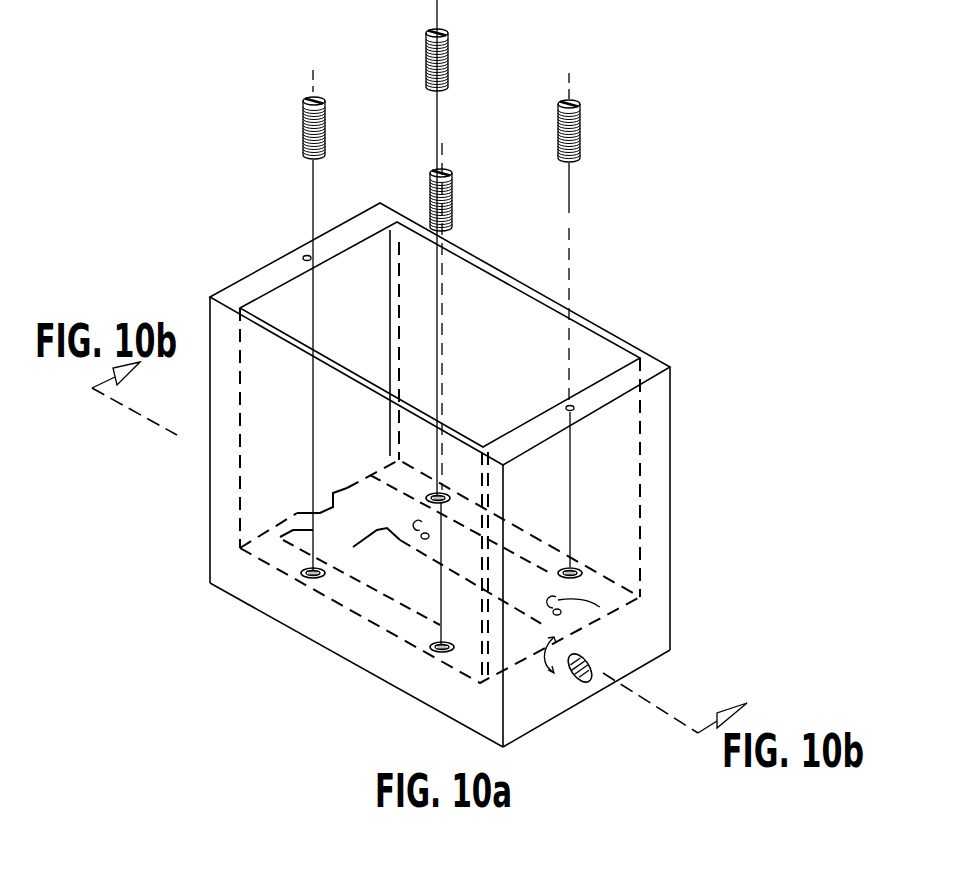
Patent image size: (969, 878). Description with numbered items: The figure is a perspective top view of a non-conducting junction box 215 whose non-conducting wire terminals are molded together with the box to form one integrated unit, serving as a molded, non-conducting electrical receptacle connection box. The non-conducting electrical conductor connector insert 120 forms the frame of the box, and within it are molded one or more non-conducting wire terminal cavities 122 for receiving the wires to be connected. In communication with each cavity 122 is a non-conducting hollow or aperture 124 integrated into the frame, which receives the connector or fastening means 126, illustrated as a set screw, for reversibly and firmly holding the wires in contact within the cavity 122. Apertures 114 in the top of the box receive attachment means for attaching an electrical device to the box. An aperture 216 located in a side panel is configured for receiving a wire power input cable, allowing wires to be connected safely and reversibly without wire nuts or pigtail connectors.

The aperture for receiving attachment means 114 is at (304, 255).
The non-conducting electrical conductor connector insert 120 is at (223, 252).
The wire terminal cavity 122 is at (420, 524).
The aperture for receiving connector or fastening means 124 is at (427, 493).
The connector or fastening means 126 is at (314, 97).
The non-conducting junction box 215 is at (692, 513).
The aperture for wire cable 216 is at (596, 664).